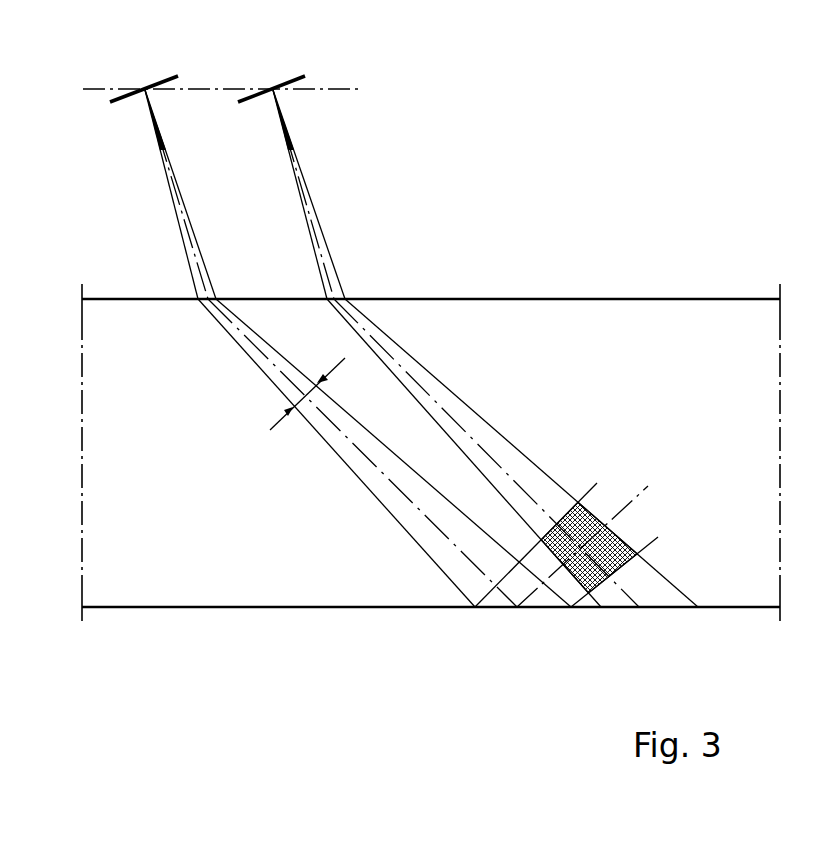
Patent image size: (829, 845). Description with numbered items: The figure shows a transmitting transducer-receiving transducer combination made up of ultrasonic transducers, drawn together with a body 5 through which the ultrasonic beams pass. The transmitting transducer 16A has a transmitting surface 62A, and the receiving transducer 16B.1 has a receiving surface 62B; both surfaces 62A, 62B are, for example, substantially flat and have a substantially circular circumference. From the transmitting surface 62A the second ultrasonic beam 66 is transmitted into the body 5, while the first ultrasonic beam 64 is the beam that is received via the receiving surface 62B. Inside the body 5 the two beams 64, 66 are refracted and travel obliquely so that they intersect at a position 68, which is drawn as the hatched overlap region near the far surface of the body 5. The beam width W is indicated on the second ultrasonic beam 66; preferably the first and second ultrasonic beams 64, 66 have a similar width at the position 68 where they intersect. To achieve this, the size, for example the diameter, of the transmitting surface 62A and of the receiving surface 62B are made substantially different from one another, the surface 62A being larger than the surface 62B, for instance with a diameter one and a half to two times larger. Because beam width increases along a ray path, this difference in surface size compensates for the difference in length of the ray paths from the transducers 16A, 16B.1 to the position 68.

The optical slab / plate 5 is at (673, 325).
The transmitting transducer 16A is at (165, 75).
The transmitting surface 62A is at (156, 153).
The second mirror 16B.1 is at (292, 77).
The receiving surface 62B is at (305, 153).
The first ultrasonic beam 64 is at (465, 427).
The second ultrasonic beam 66 is at (390, 480).
The position 68 is at (637, 554).
The beam width W is at (292, 409).